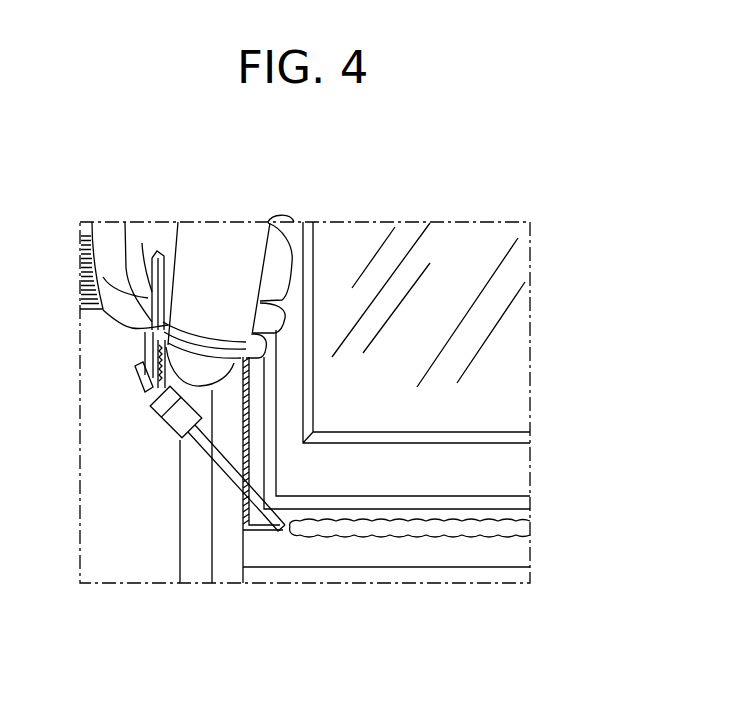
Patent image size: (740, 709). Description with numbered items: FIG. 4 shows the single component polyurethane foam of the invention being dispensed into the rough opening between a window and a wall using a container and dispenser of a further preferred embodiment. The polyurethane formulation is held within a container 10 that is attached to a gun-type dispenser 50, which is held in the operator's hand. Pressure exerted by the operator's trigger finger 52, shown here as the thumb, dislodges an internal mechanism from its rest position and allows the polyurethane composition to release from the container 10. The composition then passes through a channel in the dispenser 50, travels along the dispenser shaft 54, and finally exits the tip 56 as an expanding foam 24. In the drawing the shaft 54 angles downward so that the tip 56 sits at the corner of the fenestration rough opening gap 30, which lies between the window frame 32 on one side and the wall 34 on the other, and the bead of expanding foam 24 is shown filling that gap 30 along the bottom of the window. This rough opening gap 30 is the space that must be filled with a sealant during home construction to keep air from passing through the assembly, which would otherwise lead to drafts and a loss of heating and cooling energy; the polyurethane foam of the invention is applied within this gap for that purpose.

The container 10 is at (213, 240).
The expanding foam 24 is at (377, 530).
The rough opening gap 30 is at (250, 537).
The window frame 32 is at (477, 509).
The wall 34 is at (468, 555).
The gun-type dispenser 50 is at (170, 422).
The trigger finger 52 is at (128, 262).
The dispenser shaft 54 is at (205, 455).
The tip 56 is at (284, 540).